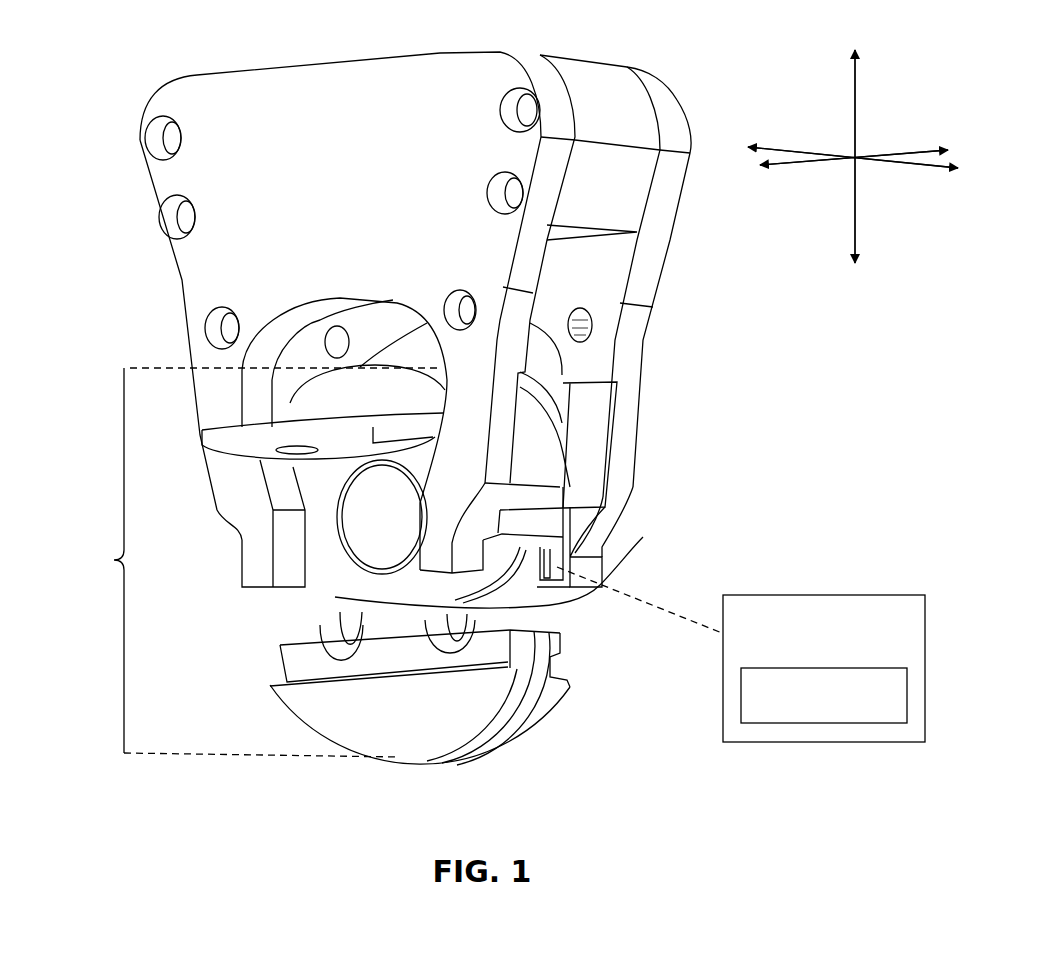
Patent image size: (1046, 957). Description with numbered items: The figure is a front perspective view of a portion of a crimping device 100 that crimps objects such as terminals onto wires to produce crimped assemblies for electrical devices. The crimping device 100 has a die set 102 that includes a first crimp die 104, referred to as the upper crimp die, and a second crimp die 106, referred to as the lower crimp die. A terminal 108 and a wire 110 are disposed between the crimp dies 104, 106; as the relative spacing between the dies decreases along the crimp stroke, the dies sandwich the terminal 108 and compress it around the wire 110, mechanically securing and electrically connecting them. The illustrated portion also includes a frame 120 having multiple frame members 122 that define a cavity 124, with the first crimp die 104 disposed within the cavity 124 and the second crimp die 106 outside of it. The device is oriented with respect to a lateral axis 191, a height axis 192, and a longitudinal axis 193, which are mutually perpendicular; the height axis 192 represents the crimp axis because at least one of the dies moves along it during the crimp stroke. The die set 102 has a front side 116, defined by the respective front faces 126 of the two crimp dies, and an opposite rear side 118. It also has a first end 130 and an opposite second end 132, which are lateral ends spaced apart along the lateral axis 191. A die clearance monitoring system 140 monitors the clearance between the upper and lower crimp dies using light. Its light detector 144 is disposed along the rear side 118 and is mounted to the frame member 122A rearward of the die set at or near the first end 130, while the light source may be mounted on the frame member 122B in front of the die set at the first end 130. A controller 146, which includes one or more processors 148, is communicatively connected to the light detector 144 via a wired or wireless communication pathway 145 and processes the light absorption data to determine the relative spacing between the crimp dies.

The crimping device 100 is at (158, 345).
The die set 102 is at (114, 560).
The first crimp die 104 is at (360, 398).
The second crimp die 106 is at (457, 730).
The terminal 108 is at (347, 563).
The wire 110 is at (378, 528).
The front side 116 is at (313, 710).
The rear side 118 is at (693, 492).
The frame 120 is at (237, 112).
The frame members 122 is at (223, 482).
The frame member 122A is at (593, 480).
The frame member 122B is at (460, 452).
The cavity 124 is at (540, 362).
The front faces 126 is at (323, 406).
The first end 130 is at (549, 641).
The second end 132 is at (278, 660).
The die clearance monitoring system 140 is at (718, 575).
The light detector 144 is at (557, 547).
The communication pathway 145 is at (580, 598).
The controller 146 is at (880, 595).
The processors 148 is at (880, 723).
The lateral axis 191 is at (895, 165).
The height axis 192 is at (853, 98).
The longitudinal axis 193 is at (895, 150).